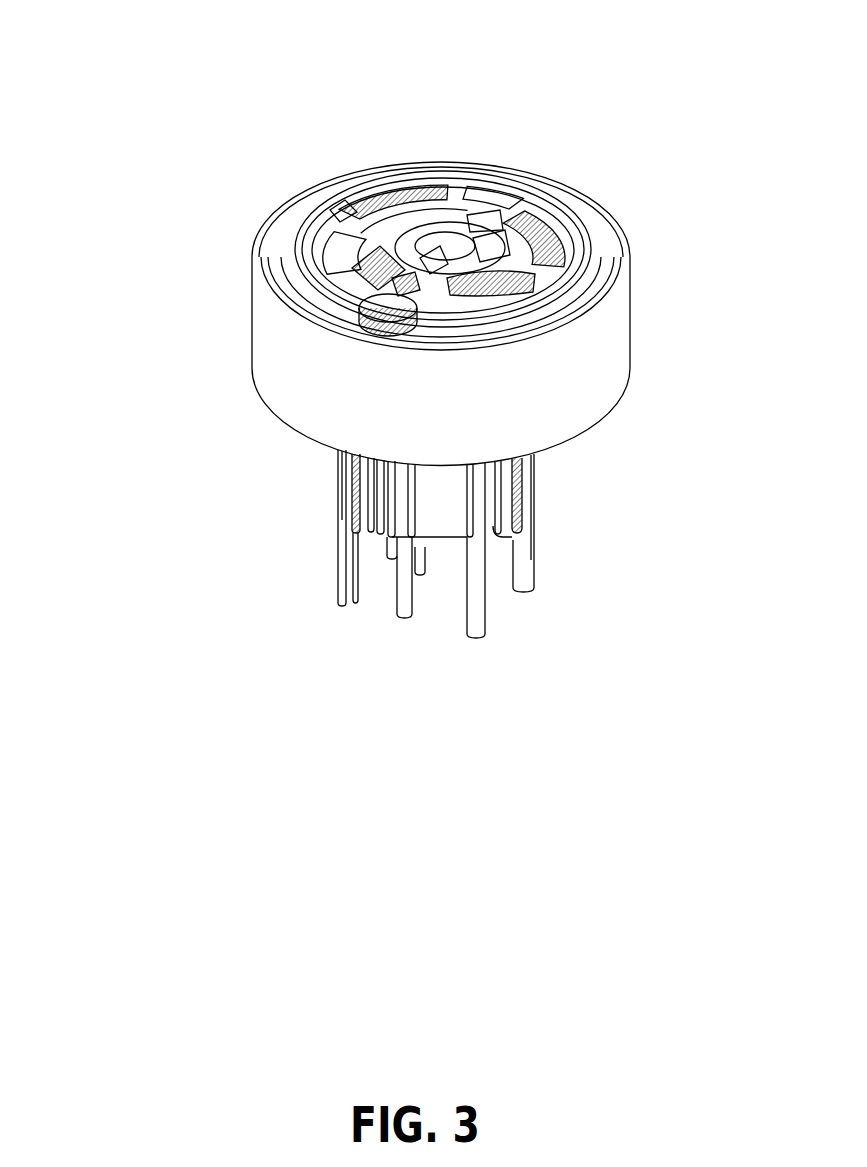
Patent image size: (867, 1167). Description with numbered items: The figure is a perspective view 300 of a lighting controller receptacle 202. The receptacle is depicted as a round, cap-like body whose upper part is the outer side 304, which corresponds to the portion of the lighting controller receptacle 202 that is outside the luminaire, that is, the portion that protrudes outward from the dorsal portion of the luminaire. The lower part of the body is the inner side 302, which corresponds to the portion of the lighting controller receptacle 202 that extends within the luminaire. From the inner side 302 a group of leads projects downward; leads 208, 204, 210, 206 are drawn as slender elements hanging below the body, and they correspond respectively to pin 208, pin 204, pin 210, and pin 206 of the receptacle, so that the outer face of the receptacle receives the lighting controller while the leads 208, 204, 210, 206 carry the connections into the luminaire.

The perspective view 300 is at (663, 85).
The lighting controller receptacle 202 is at (274, 306).
The lead 204 is at (413, 618).
The lead 206 is at (535, 569).
The lead 208 is at (340, 606).
The lead 210 is at (490, 620).
The inner side 302 is at (638, 663).
The outer side 304 is at (160, 420).